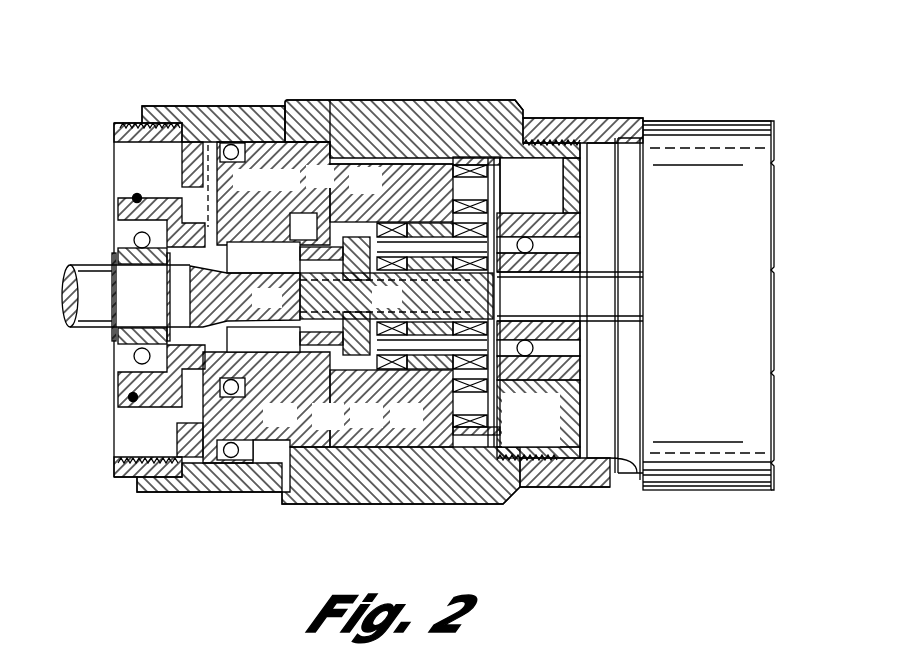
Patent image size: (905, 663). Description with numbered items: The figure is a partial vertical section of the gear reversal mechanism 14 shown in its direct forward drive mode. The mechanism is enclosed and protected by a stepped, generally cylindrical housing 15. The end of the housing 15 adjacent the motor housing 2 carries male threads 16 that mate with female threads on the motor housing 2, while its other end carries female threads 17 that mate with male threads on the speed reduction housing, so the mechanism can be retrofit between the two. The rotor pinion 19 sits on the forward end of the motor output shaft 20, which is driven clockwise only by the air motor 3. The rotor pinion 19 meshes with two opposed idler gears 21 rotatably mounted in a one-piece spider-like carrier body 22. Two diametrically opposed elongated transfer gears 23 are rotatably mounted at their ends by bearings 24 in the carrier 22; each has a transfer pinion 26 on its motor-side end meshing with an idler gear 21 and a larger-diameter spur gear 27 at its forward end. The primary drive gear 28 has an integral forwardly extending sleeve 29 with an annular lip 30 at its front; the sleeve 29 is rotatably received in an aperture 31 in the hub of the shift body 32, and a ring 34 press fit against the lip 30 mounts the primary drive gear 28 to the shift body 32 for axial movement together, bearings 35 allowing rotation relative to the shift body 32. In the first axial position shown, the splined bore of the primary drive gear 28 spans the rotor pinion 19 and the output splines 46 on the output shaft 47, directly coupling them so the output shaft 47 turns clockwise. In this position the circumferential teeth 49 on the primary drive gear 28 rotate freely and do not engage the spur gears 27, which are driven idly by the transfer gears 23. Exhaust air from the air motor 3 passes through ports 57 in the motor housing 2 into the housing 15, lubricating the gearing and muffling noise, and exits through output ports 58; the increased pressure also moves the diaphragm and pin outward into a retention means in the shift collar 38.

The motor housing 2 is at (705, 468).
The air motor 3 is at (627, 462).
The gear reversal mechanism 14 is at (381, 86).
The housing 15 is at (252, 108).
The male threads 16 is at (550, 116).
The female threads 17 is at (120, 134).
The rotor pinion 19 is at (493, 298).
The motor output shaft 20 is at (575, 303).
The idler gears 21 is at (424, 282).
The carrier body 22 is at (471, 157).
The transfer gears 23 is at (356, 192).
The bearings 24 is at (224, 126).
The transfer pinion 26 is at (427, 160).
The spur gear 27 is at (308, 117).
The primary drive gear 28 is at (450, 383).
The sleeve 29 is at (300, 281).
The annular lip 30 is at (300, 255).
The aperture 31 is at (296, 203).
The shift body 32 is at (330, 243).
The ring 34 is at (300, 347).
The bearings 35 is at (313, 345).
The shift collar 38 is at (499, 102).
The output splines 46 is at (187, 297).
The output shaft 47 is at (88, 266).
The circumferential teeth 49 is at (358, 367).
The ports 57 is at (582, 167).
The output ports 58 is at (190, 185).